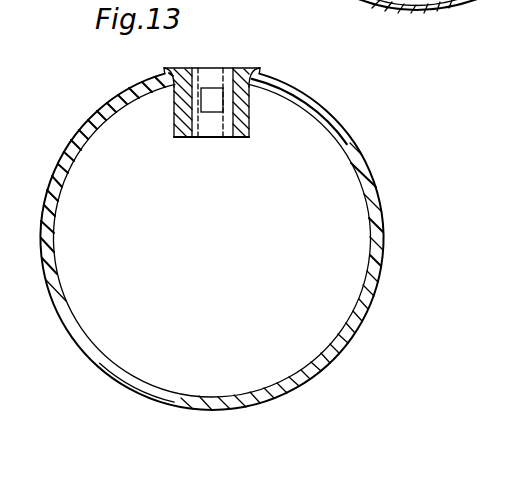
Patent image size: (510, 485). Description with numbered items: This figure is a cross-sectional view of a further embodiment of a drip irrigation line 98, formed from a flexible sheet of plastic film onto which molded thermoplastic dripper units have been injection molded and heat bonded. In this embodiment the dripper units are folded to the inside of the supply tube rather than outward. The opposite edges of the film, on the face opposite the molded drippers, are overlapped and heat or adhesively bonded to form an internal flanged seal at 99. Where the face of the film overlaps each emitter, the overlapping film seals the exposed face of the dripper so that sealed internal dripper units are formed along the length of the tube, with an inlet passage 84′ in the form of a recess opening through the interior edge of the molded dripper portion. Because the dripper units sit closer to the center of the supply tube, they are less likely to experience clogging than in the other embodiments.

The drip irrigation line 98 is at (367, 333).
The internal flanged seal 99 is at (174, 132).
The inlet passage 84′ is at (229, 141).